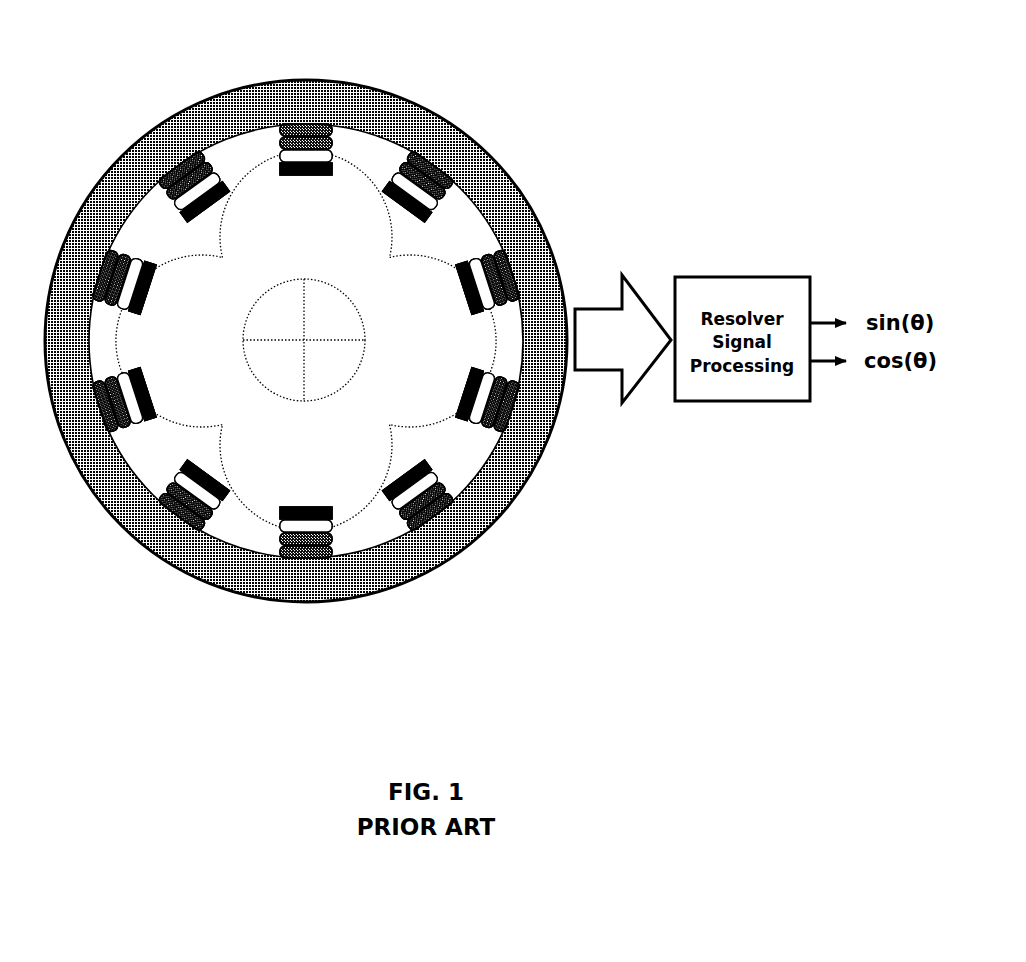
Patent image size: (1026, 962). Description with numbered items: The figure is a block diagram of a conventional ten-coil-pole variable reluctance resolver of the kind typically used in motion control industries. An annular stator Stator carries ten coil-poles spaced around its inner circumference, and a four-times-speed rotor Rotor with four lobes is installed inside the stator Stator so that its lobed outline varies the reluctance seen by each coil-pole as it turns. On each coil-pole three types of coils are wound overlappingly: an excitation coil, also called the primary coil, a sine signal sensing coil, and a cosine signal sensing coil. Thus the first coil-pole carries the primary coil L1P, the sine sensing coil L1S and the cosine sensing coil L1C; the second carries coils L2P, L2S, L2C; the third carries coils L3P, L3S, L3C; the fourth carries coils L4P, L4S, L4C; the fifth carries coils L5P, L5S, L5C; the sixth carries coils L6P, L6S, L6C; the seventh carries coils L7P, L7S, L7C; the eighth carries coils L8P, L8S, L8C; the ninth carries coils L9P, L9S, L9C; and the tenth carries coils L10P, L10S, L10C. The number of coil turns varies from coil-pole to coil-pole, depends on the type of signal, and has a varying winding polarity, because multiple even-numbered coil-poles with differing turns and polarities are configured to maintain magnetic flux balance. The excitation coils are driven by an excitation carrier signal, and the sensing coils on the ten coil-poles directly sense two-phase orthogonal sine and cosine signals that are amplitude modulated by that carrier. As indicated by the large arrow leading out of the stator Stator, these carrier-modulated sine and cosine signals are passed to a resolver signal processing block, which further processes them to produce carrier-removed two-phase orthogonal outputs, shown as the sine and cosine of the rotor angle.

The excitation coil (primary coil) L1P is at (306, 124).
The sine signal sensing coil L1S is at (306, 99).
The cosine signal sensing coil L1C is at (306, 114).
The excitation coil (primary coil) L2P is at (425, 160).
The sine signal sensing coil L2S is at (438, 152).
The cosine signal sensing coil L2C is at (438, 166).
The excitation coil (primary coil) L3P is at (500, 262).
The sine signal sensing coil L3S is at (532, 262).
The cosine signal sensing coil L3C is at (532, 277).
The excitation coil (primary coil) L4P is at (515, 410).
The sine signal sensing coil L4S is at (526, 423).
The cosine signal sensing coil L4C is at (526, 438).
The excitation coil (primary coil) L5P is at (433, 520).
The sine signal sensing coil L5S is at (447, 533).
The cosine signal sensing coil L5C is at (447, 548).
The excitation coil (primary coil) L6P is at (322, 557).
The sine signal sensing coil L6S is at (306, 586).
The cosine signal sensing coil L6C is at (306, 601).
The excitation coil (primary coil) L7P is at (178, 523).
The sine signal sensing coil L7S is at (174, 538).
The cosine signal sensing coil L7C is at (174, 553).
The excitation coil (primary coil) L8P is at (100, 418).
The sine signal sensing coil L8S is at (84, 408).
The cosine signal sensing coil L8C is at (84, 423).
The excitation coil (primary coil) L9P is at (100, 270).
The sine signal sensing coil L9S is at (84, 273).
The cosine signal sensing coil L9C is at (84, 281).
The excitation coil (primary coil) L10P is at (187, 160).
The sine signal sensing coil L10S is at (175, 142).
The cosine signal sensing coil L10C is at (175, 157).
The stator Stator is at (382, 110).
The 4× speed rotor Rotor is at (382, 310).